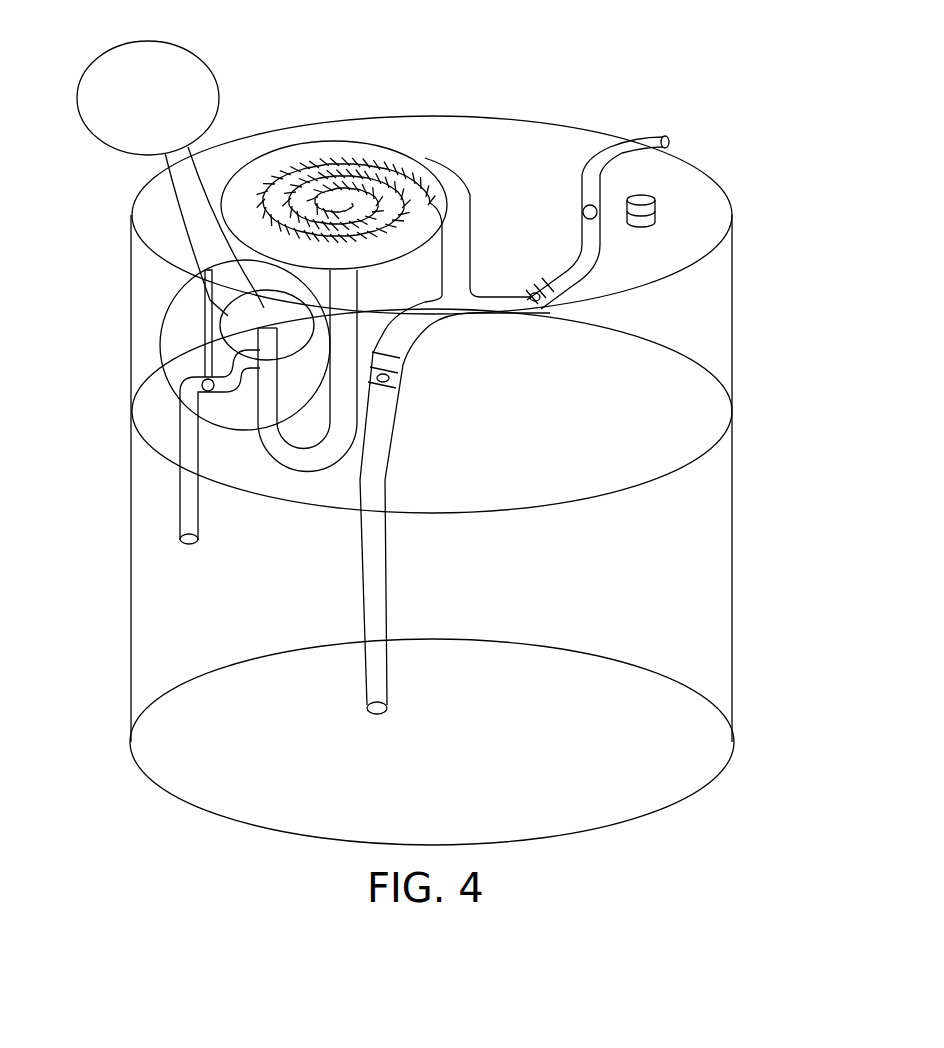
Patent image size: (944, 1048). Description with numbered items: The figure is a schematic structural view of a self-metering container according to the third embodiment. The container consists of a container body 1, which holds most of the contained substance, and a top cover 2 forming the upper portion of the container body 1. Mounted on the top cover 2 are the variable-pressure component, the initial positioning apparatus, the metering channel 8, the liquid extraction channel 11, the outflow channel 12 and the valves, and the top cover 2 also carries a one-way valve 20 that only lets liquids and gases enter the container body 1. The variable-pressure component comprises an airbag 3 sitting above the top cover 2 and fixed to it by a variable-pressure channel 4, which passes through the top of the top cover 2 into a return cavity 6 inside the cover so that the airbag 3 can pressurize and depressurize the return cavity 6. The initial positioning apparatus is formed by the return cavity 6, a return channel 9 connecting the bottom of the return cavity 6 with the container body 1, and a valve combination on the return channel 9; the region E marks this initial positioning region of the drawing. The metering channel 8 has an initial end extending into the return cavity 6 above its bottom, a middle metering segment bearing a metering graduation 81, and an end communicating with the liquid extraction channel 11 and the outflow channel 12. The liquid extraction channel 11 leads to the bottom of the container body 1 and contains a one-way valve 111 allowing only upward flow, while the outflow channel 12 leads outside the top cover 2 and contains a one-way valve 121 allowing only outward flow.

The container body 1 is at (700, 578).
The top cover 2 is at (707, 327).
The airbag 3 is at (193, 88).
The variable-pressure channel 4 is at (193, 210).
The return cavity 6 is at (237, 310).
The float valve assembly E is at (160, 347).
The metering channel 8 is at (453, 260).
The metering graduation 81 is at (347, 143).
The return channel 9 is at (190, 455).
The liquid extraction channel 11 is at (377, 453).
The one-way valve 111 is at (473, 348).
The outflow channel 12 is at (576, 268).
The one-way valve 121 is at (537, 287).
The one-way valve 20 is at (652, 198).